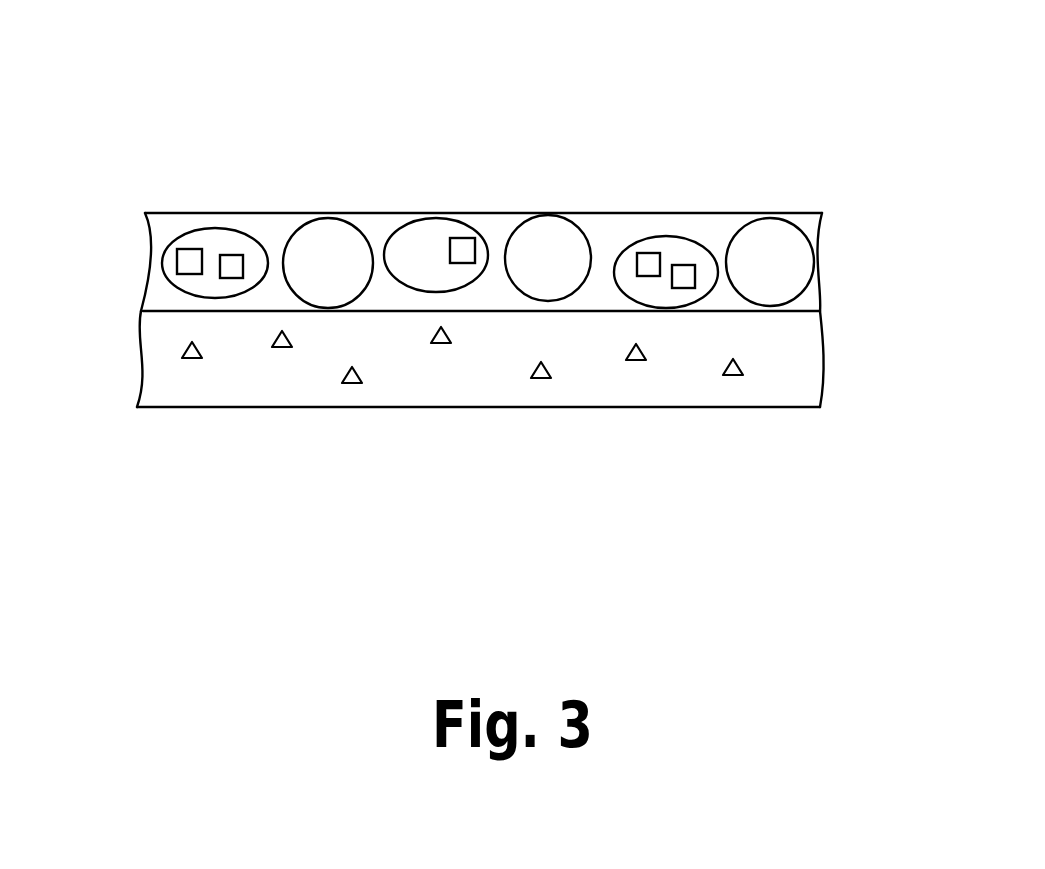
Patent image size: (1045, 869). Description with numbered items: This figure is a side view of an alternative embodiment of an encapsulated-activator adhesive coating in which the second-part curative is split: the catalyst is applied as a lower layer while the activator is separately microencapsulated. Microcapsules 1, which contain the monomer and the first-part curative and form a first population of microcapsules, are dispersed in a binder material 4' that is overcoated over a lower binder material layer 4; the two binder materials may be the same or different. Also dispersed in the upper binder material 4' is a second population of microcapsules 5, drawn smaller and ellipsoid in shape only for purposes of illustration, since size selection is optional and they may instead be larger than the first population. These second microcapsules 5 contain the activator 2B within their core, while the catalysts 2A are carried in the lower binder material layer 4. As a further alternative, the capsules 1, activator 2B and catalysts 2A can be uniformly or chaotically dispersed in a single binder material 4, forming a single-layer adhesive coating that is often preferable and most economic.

The microcapsules 1 is at (318, 247).
The catalysts 2A is at (348, 377).
The activator 2B is at (230, 257).
The lower binder material layer 4 is at (536, 359).
The binder material 4' is at (433, 239).
The second population of microcapsules 5 is at (197, 232).